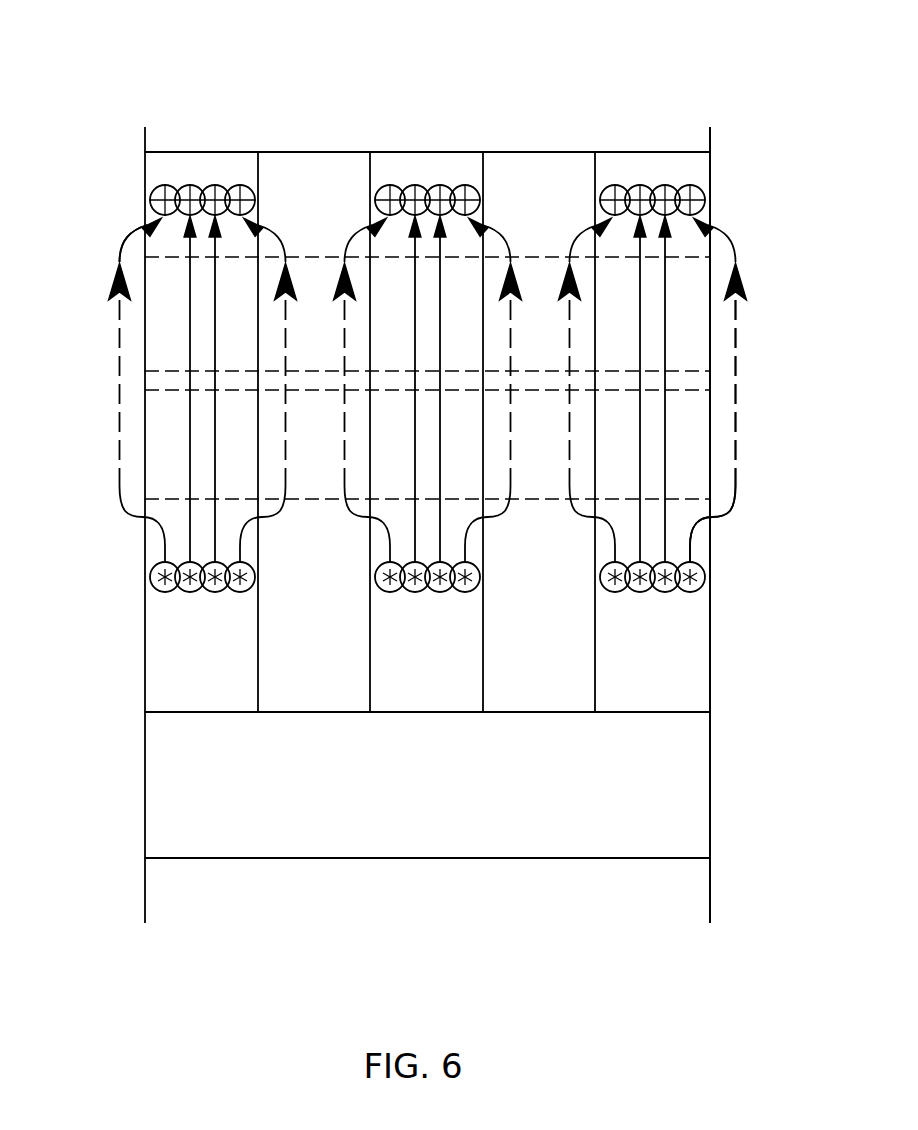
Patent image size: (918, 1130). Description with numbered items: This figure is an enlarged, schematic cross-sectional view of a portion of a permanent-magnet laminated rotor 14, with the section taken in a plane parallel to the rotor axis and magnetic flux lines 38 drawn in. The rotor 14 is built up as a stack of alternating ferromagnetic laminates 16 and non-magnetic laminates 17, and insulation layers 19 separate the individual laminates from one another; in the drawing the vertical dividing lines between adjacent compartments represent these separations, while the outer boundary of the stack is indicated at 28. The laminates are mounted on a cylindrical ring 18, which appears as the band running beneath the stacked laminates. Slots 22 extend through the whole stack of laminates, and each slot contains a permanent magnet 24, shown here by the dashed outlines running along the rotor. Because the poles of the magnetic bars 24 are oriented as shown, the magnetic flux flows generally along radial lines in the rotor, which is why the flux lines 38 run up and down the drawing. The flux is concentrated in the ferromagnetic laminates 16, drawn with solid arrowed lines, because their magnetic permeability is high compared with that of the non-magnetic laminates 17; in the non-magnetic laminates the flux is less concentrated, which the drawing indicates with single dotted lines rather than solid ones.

The PM laminated rotor 14 is at (770, 543).
The ferromagnetic laminates 16 is at (413, 152).
The non-magnetic laminates 17 is at (195, 152).
The cylindrical ring 18 is at (358, 800).
The insulation layers 19 is at (258, 152).
The slots 22 is at (713, 492).
The permanent magnets 24 is at (682, 318).
The outer wall 28 is at (687, 152).
The magnetic flux lines 38 is at (167, 273).